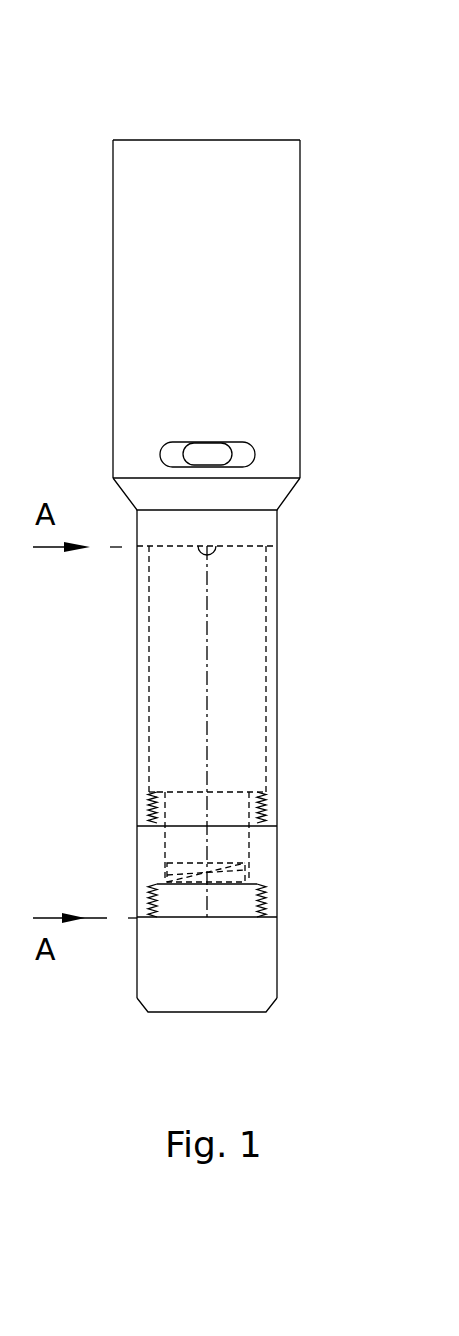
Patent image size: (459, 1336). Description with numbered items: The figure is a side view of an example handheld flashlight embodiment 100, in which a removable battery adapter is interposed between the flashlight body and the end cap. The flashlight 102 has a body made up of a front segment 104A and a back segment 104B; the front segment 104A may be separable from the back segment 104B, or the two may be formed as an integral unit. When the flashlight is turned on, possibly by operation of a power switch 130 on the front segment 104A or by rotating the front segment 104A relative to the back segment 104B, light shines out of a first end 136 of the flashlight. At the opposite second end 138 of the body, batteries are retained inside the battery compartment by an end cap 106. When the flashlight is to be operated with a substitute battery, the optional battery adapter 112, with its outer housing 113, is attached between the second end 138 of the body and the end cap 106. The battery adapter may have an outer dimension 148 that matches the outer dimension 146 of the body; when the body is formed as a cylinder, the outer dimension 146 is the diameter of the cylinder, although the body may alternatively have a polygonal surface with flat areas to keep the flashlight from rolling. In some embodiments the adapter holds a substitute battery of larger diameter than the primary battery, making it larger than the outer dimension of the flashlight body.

The example embodiment 100 is at (217, 564).
The first end 136 is at (170, 100).
The front segment 104A is at (217, 268).
The power switch 130 is at (183, 453).
The flashlight 102 is at (300, 478).
The back segment 104B is at (277, 667).
The outer dimension of the body 146 is at (126, 763).
The outer dimension of the battery adapter 148 is at (126, 857).
The battery adapter 112 is at (266, 910).
The outer housing 113 is at (277, 883).
The end cap 106 is at (237, 1040).
The second end 138 is at (232, 1060).